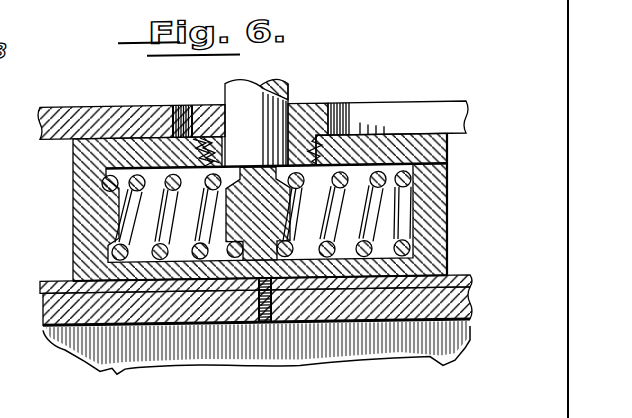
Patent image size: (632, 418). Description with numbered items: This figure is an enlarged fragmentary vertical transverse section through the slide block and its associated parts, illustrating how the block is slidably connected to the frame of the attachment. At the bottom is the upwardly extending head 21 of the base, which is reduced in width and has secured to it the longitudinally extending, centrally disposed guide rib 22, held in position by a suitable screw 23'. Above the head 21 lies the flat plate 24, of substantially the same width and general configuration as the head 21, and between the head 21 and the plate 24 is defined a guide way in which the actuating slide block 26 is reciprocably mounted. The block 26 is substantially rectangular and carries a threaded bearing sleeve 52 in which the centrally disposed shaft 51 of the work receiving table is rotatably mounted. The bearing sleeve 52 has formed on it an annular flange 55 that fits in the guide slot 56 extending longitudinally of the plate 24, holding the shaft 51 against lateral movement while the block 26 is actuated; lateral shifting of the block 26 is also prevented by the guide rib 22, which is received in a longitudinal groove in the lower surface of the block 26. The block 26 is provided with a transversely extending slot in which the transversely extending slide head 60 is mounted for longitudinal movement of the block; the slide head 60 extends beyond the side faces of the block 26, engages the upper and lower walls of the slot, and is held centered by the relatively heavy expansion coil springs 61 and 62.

The head 21 is at (43, 331).
The guide rib 22 is at (60, 283).
The screw 23' is at (301, 337).
The flat plate 24 is at (90, 123).
The slide block 26 is at (387, 156).
The shaft 51 is at (277, 91).
The bearing sleeve 52 is at (180, 108).
The annular flange 55 is at (313, 118).
The guide slot 56 is at (378, 128).
The slide head 60 is at (256, 226).
The expansion coil spring 61 is at (133, 202).
The expansion coil spring 62 is at (338, 180).